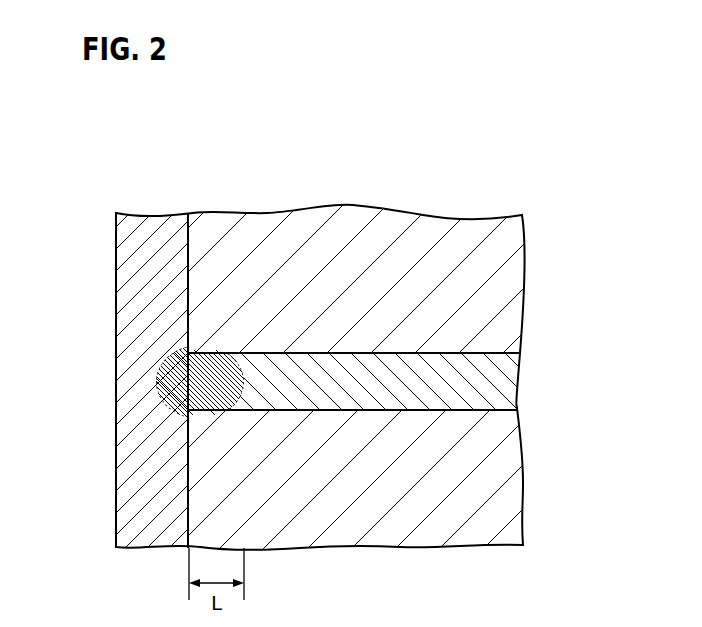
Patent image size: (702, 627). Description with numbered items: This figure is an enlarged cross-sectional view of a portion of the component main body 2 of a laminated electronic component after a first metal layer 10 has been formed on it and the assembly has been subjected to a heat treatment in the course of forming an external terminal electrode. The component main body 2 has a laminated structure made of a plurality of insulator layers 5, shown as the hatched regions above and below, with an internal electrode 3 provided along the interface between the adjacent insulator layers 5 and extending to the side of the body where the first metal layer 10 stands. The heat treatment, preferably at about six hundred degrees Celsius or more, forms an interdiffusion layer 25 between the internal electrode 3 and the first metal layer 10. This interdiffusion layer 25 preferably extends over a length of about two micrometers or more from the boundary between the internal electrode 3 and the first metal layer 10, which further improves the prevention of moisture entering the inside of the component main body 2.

The component main body 2 is at (478, 220).
The internal electrode 3 is at (508, 375).
The insulator layer 5 is at (513, 272).
The first metal layer 10 is at (117, 336).
The interdiffusion layer 25 is at (210, 353).